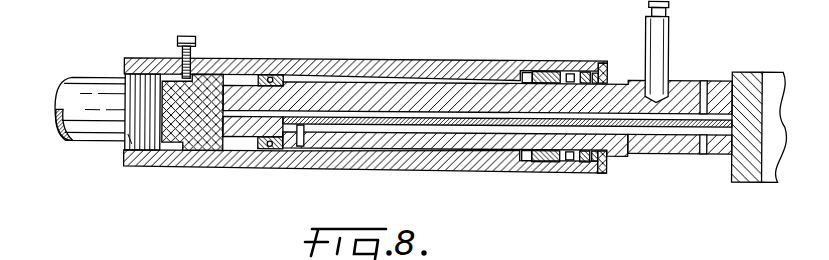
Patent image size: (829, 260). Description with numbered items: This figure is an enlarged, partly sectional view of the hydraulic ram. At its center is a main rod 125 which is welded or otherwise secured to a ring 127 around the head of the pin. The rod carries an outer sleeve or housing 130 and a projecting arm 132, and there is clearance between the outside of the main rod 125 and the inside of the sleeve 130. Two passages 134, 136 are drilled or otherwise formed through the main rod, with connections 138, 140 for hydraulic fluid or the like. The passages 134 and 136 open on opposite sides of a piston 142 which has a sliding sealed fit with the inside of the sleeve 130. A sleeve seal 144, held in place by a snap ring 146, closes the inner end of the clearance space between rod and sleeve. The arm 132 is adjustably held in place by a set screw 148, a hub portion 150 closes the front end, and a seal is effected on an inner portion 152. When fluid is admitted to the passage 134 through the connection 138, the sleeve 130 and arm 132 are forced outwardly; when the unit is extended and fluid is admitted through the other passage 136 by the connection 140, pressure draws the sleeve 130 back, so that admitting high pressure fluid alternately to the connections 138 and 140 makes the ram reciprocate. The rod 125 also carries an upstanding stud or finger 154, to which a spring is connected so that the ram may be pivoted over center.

The main rod 125 is at (658, 143).
The ring 127 is at (746, 76).
The outer sleeve or housing 130 is at (403, 38).
The projecting arm 132 is at (82, 92).
The passage 134 is at (402, 115).
The passage 136 is at (428, 132).
The connection 138 is at (703, 82).
The connection 140 is at (705, 150).
The piston 142 is at (279, 76).
The sleeve seal 144 is at (550, 157).
The snap ring 146 is at (598, 157).
The set screw 148 is at (185, 37).
The hub portion 150 is at (128, 140).
The inner portion 152 is at (212, 150).
The upstanding stud or finger 154 is at (648, 27).